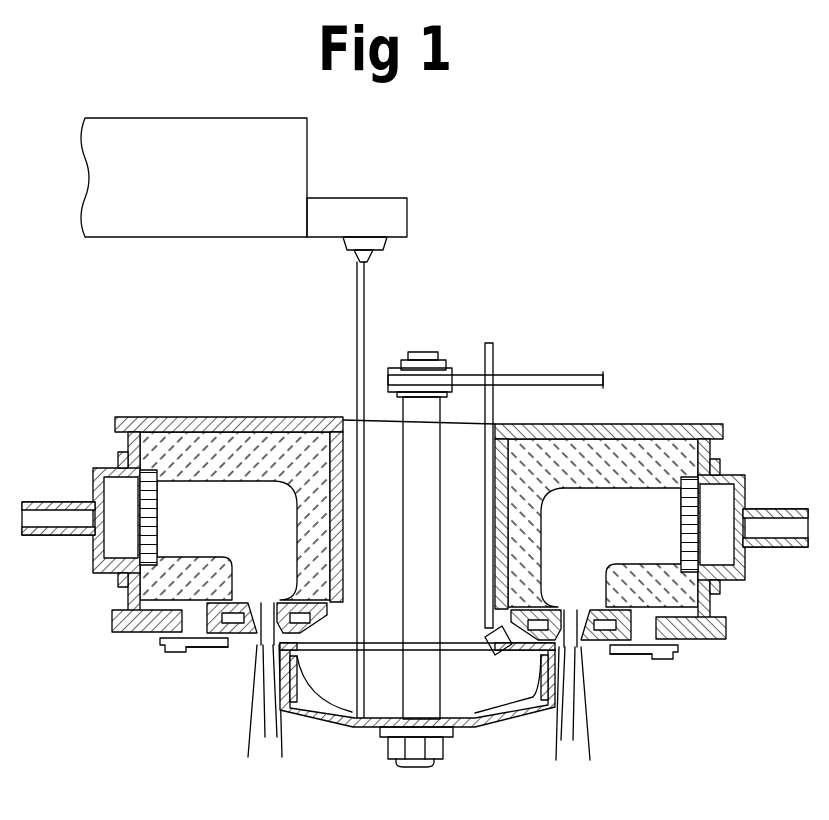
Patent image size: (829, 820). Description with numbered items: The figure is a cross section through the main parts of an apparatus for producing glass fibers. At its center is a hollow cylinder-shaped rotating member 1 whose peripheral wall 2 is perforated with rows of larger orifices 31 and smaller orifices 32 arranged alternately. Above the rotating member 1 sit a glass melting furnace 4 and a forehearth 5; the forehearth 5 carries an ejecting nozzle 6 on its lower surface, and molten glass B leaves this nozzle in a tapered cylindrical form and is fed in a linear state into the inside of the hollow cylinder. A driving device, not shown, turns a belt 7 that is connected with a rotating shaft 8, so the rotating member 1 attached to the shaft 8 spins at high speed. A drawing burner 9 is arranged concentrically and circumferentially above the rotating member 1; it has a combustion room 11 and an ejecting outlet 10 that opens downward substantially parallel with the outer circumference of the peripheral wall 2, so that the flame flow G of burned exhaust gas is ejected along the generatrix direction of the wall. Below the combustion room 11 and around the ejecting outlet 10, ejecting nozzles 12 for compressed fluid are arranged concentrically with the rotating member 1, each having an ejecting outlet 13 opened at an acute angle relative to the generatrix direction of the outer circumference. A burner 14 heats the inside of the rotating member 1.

The rotating member 1 is at (313, 722).
The peripheral wall 2 is at (270, 694).
The glass melting furnace 4 is at (105, 182).
The forehearth 5 is at (379, 199).
The ejecting nozzle 6 is at (388, 243).
The belt 7 is at (563, 374).
The rotating shaft 8 is at (437, 352).
The drawing burner 9 is at (128, 592).
The ejecting outlet 10 is at (262, 648).
The combustion room 11 is at (188, 502).
The ejecting nozzle 12 is at (163, 645).
The ejecting outlet 13 is at (228, 650).
The burner 14 is at (492, 648).
The larger orifice 31 is at (578, 662).
The smaller orifice 32 is at (578, 684).
The molten glass B is at (358, 300).
The flame flow G is at (258, 727).